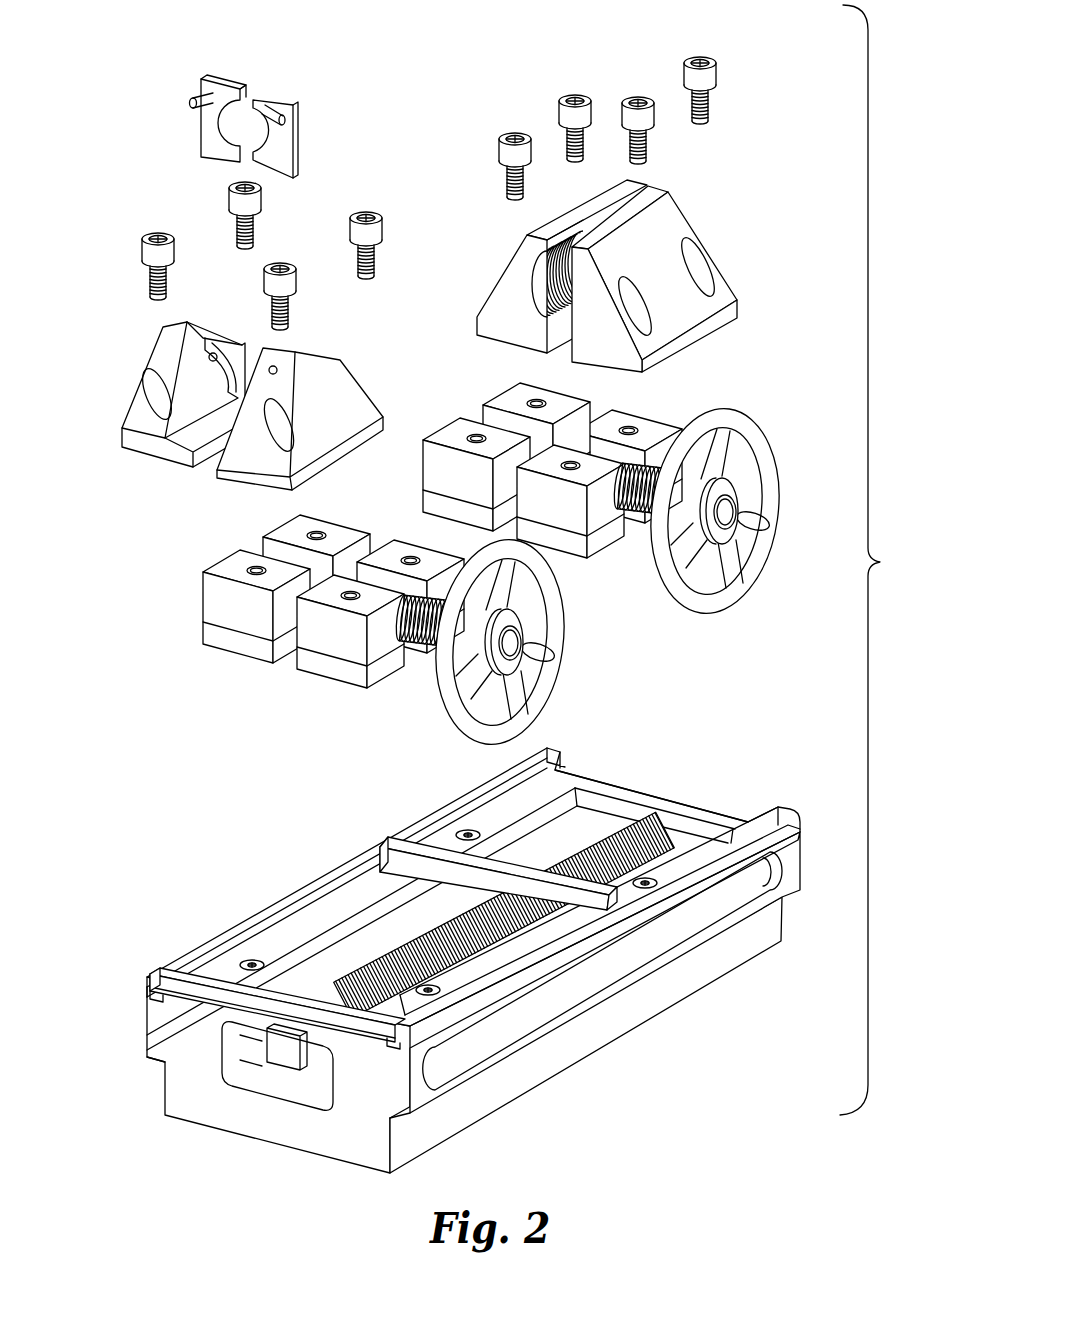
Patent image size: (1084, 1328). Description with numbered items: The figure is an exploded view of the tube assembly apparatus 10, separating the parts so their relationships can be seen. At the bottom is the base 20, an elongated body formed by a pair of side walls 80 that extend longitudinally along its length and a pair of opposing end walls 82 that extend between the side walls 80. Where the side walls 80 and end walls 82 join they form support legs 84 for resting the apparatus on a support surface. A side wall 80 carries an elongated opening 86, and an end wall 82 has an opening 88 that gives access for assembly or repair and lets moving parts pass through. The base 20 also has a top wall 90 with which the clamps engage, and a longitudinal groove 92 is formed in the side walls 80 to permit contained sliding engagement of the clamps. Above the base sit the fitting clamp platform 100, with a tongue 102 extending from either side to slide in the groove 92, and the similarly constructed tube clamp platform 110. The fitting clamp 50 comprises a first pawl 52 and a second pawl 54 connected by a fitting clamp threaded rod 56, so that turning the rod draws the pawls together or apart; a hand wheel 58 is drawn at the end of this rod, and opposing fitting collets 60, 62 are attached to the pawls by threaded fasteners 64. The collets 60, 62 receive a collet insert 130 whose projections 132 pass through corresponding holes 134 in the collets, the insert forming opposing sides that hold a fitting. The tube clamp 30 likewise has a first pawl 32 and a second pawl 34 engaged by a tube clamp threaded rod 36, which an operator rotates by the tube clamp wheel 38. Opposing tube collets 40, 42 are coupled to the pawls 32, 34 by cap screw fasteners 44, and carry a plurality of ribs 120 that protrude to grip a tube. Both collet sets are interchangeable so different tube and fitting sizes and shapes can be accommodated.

The tube assembly apparatus 10 is at (880, 562).
The base 20 is at (467, 988).
The tube clamp 30 is at (638, 336).
The first pawl 32 is at (620, 422).
The second pawl 34 is at (540, 393).
The tube clamp threaded rod 36 is at (640, 520).
The tube clamp wheel 38 is at (778, 493).
The first tube collet 40 is at (610, 351).
The second tube collet 42 is at (551, 266).
The fasteners 44 is at (500, 175).
The fitting clamp 50 is at (346, 623).
The first fitting clamp pawl 52 is at (302, 640).
The second fitting clamp pawl 54 is at (215, 610).
The fitting clamp threaded rod 56 is at (428, 648).
The hand wheel 58 is at (543, 692).
The first fitting collet 60 is at (347, 434).
The second fitting collet 62 is at (163, 355).
The threaded fasteners 64 is at (260, 215).
The side walls 80 is at (160, 1087).
The end walls 82 is at (785, 918).
The support legs 84 is at (170, 1118).
The elongated opening 86 is at (770, 872).
The opening 88 is at (287, 1085).
The top wall 90 is at (173, 963).
The longitudinal groove 92 is at (150, 992).
The fitting clamp platform 100 is at (277, 1003).
The tongue 102 is at (160, 1000).
The tube clamp platform 110 is at (443, 848).
The ribs 120 is at (530, 296).
The collet insert 130 is at (249, 96).
The projections 132 is at (200, 98).
The holes 134 is at (211, 352).